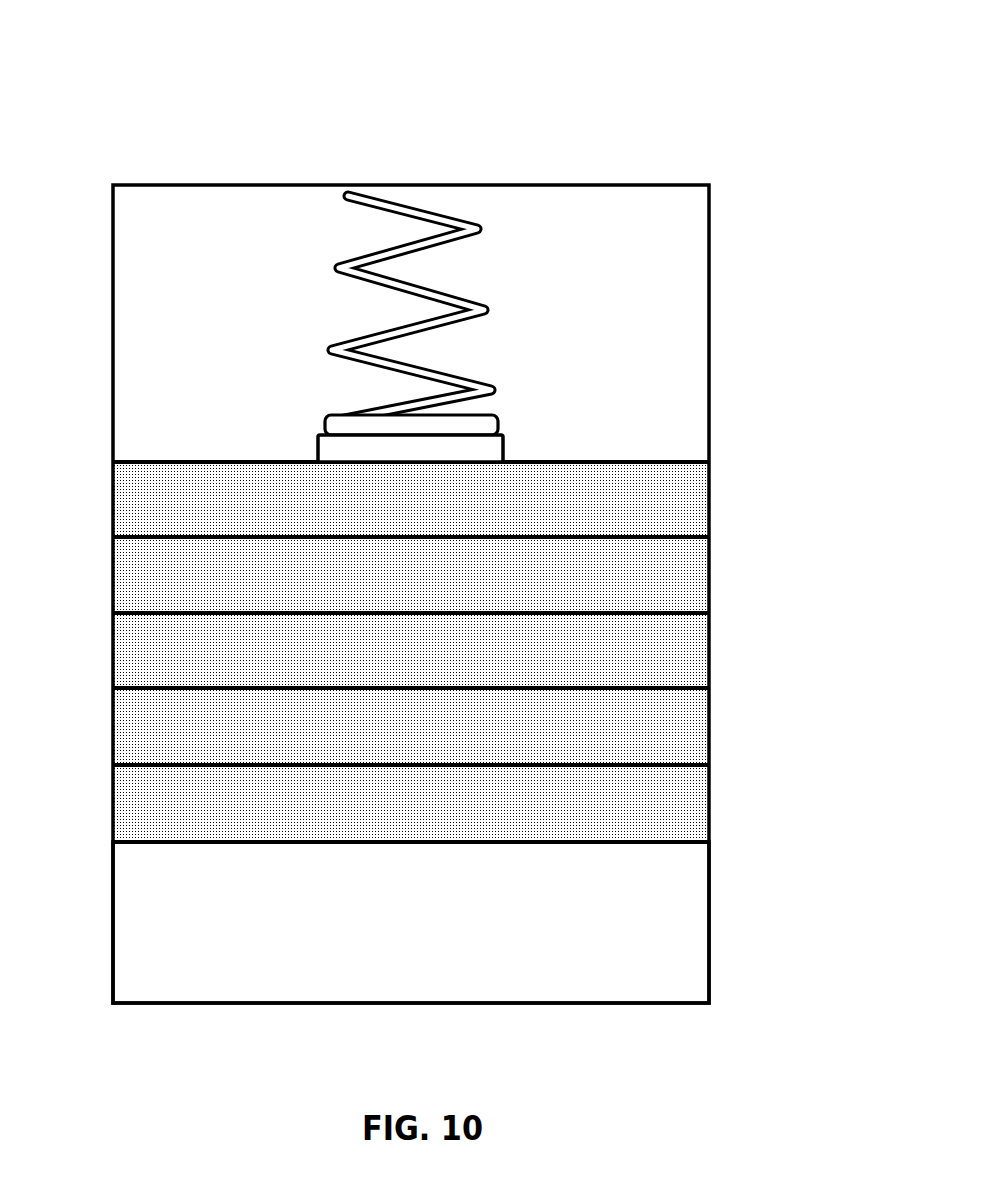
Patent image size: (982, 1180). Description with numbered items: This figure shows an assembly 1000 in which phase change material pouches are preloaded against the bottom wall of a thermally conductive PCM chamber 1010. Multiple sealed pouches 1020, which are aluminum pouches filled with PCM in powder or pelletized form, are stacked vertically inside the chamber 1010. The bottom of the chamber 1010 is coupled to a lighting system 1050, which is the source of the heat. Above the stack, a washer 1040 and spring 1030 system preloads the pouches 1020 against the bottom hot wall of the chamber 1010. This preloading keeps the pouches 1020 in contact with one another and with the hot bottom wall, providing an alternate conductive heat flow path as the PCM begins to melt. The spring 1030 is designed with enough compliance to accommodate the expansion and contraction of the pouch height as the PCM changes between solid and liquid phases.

The lighting device 1000 is at (160, 56).
The PCM chamber 1010 is at (668, 185).
The sealed pouches 1020 is at (693, 803).
The spring 1030 is at (448, 214).
The washer 1040 is at (507, 437).
The lighting system 1050 is at (710, 862).